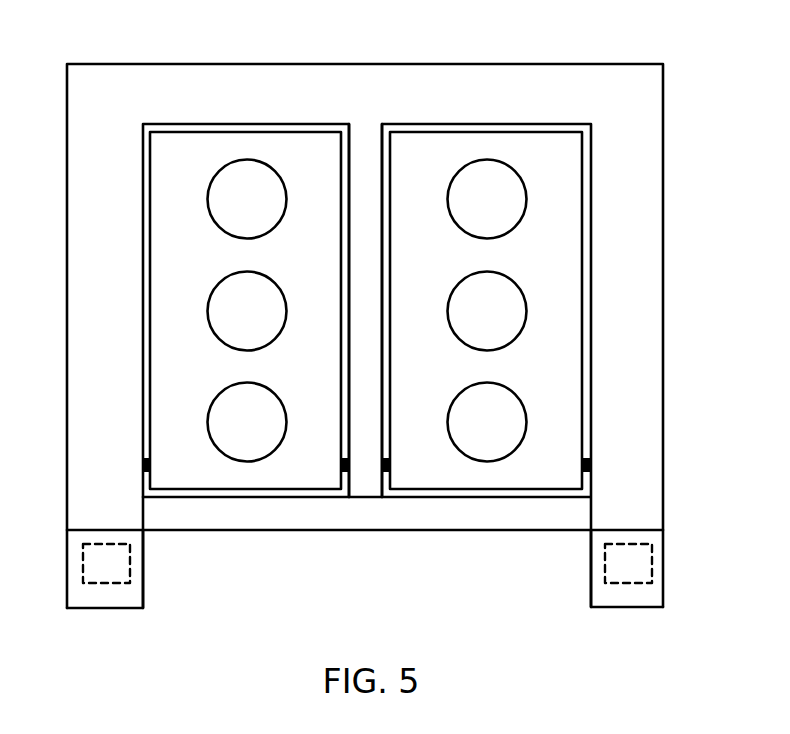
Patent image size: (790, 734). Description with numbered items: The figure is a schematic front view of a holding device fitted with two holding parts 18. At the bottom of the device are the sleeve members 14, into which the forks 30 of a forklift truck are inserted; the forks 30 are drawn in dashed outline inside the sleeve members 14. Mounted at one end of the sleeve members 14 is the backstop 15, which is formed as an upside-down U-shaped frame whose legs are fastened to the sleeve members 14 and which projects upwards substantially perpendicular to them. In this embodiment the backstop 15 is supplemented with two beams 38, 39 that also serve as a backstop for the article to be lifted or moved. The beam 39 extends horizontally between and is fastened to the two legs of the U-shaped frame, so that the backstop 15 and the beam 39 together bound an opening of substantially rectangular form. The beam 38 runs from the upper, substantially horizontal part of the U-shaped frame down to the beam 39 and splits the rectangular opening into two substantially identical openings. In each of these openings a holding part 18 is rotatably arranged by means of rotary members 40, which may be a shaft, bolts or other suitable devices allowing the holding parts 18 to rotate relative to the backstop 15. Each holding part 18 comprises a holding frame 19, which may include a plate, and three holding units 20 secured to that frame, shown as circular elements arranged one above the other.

The sleeve members 14 is at (144, 588).
The backstop 15 is at (664, 288).
The holding part 18 is at (181, 131).
The holding frame 19 is at (170, 255).
The holding units 20 is at (282, 174).
The forks 30 is at (83, 561).
The beam 38 is at (366, 160).
The beam 39 is at (366, 512).
The rotary member 40 is at (142, 465).